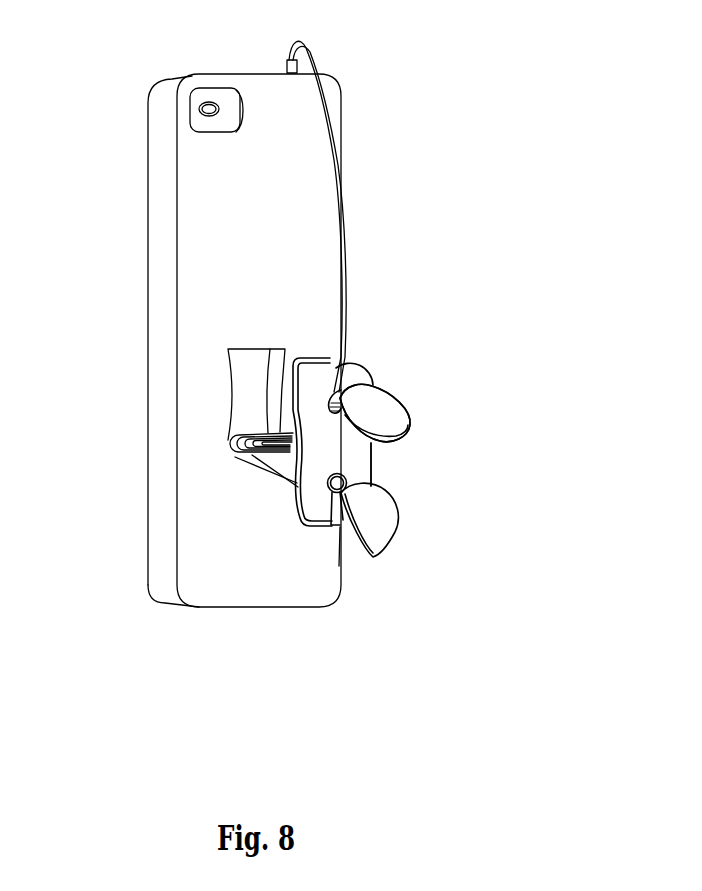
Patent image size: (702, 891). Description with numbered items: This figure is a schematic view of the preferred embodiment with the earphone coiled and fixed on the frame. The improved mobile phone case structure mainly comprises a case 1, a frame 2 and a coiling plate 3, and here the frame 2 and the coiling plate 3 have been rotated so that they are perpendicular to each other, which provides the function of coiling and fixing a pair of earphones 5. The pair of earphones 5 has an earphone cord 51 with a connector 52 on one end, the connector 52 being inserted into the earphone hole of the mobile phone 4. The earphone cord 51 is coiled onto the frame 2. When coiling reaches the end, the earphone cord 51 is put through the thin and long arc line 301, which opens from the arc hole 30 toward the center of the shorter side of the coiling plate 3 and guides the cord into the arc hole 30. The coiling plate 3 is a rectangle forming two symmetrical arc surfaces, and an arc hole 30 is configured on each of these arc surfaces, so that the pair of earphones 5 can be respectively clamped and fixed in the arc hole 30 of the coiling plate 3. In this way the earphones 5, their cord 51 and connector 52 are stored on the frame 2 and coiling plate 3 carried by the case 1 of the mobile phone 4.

The case 1 is at (147, 253).
The frame 2 is at (265, 455).
The coiling plate 3 is at (500, 469).
The mobile phone 4 is at (227, 110).
The pair of earphones 5 is at (493, 337).
The arc hole 30 is at (350, 362).
The thin and long arc line 301 is at (340, 387).
The earphone cord 51 is at (325, 117).
The connector 52 is at (285, 62).